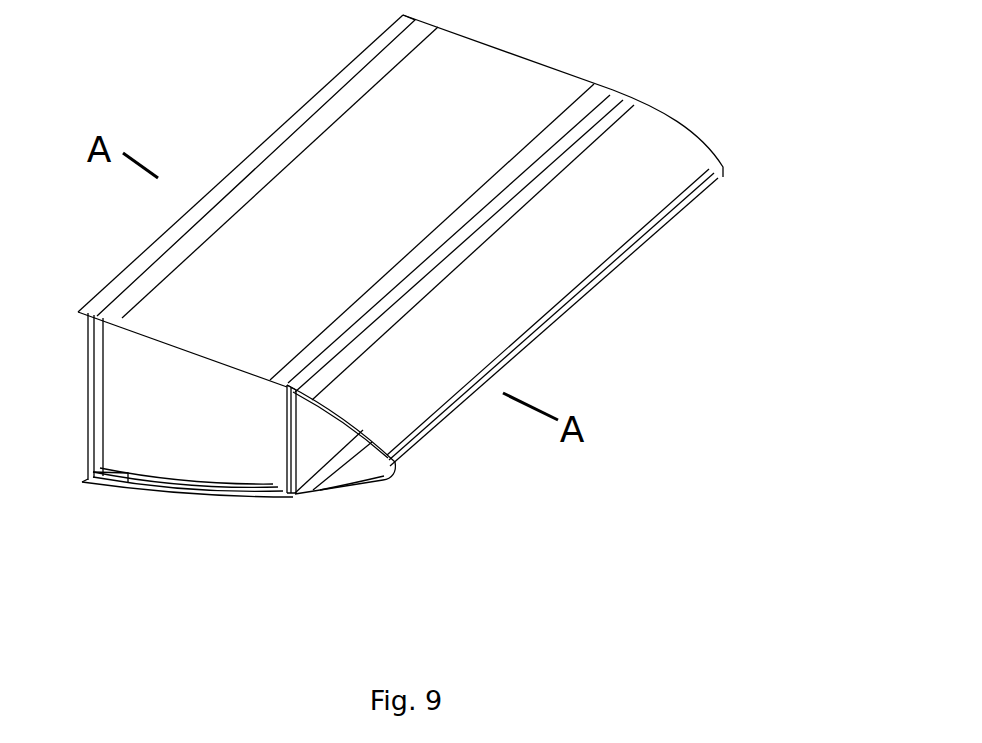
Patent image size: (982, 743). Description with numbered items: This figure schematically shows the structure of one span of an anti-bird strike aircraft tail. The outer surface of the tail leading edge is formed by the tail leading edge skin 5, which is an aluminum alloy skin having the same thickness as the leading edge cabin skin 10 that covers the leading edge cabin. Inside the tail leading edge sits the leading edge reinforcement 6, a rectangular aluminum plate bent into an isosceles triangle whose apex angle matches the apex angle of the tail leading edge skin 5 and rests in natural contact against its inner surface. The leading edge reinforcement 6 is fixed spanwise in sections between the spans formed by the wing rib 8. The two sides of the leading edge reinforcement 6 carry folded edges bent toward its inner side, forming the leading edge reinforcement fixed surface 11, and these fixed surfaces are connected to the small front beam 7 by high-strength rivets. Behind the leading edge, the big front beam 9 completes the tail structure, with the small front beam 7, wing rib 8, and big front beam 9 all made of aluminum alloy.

The tail leading edge skin 5 is at (488, 355).
The leading edge reinforcement 6 is at (370, 465).
The small front beam 7 is at (295, 363).
The wing rib 8 is at (210, 447).
The big front beam 9 is at (457, 110).
The leading edge cabin skin 10 is at (382, 43).
The leading edge reinforcement fixed surface 11 is at (310, 467).